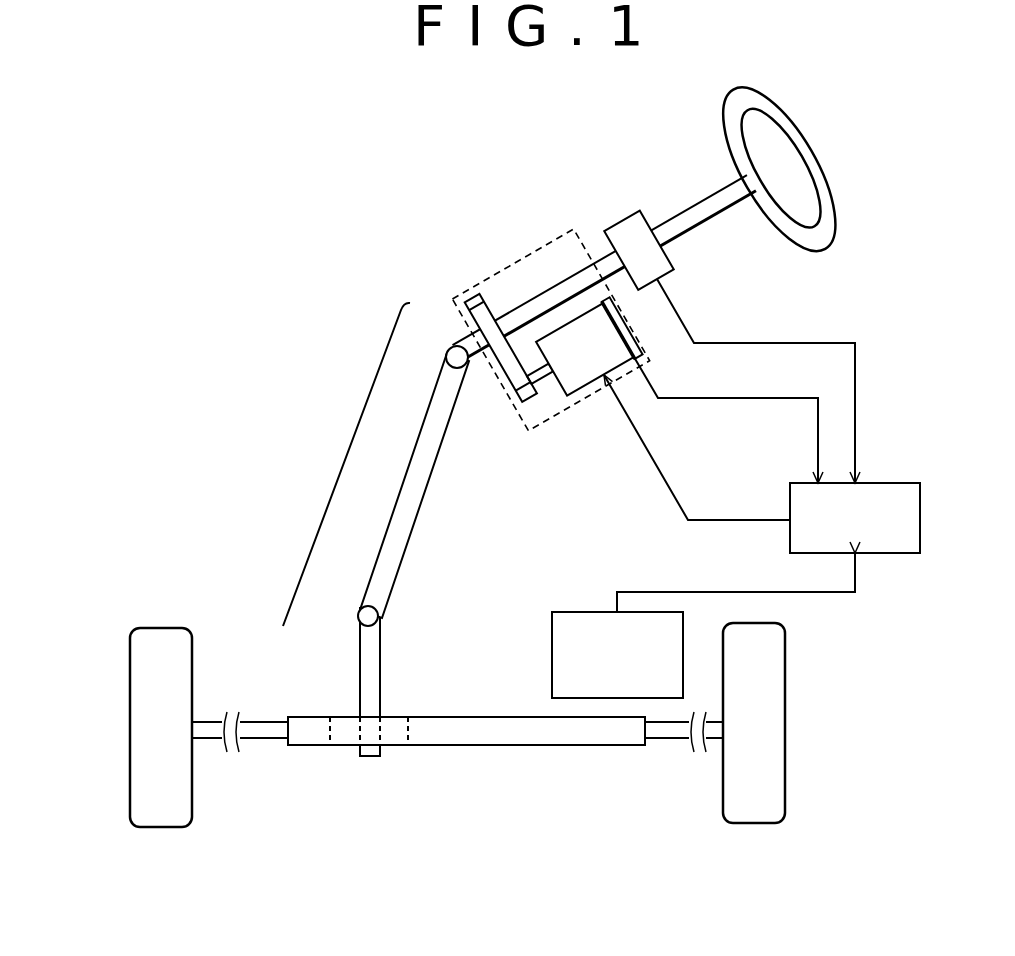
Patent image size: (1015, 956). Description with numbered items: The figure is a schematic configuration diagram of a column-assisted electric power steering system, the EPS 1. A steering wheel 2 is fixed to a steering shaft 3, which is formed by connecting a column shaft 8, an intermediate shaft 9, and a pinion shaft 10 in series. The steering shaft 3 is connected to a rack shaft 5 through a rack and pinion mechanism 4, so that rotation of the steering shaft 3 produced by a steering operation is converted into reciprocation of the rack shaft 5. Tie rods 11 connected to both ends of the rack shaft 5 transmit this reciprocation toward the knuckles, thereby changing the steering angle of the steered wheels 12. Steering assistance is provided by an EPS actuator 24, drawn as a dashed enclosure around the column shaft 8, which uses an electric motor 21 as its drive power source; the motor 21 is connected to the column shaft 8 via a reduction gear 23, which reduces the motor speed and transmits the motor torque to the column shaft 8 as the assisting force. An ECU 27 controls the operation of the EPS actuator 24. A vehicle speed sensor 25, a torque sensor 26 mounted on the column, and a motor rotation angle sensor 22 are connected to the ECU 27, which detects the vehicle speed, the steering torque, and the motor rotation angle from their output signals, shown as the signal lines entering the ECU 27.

The EPS 1 is at (906, 128).
The steering wheel 2 is at (832, 197).
The steering shaft 3 is at (331, 497).
The rack and pinion mechanism 4 is at (398, 746).
The rack shaft 5 is at (460, 717).
The column shaft 8 is at (465, 333).
The intermediate shaft 9 is at (392, 512).
The pinion shaft 10 is at (359, 631).
The tie rods 11 is at (263, 740).
The steered wheels 12 is at (192, 662).
The electric motor 21 is at (602, 364).
The motor rotation angle sensor 22 is at (622, 334).
The reduction gear 23 is at (518, 396).
The EPS actuator 24 is at (522, 258).
The vehicle speed sensor 25 is at (570, 612).
The torque sensor 26 is at (622, 221).
The ECU 27 is at (921, 522).